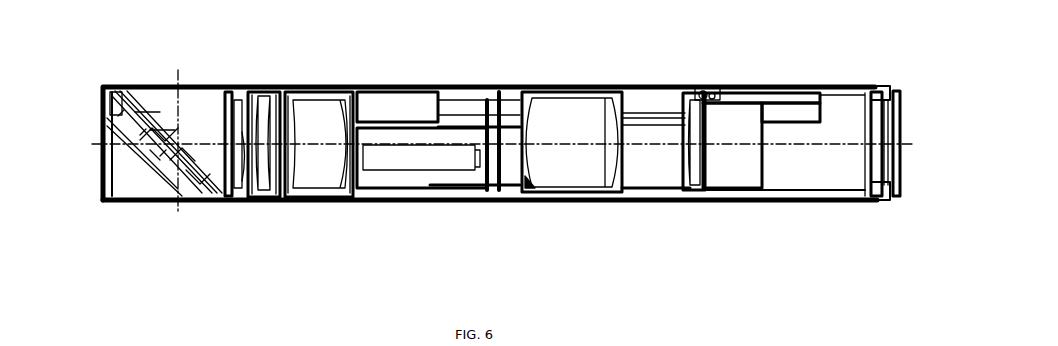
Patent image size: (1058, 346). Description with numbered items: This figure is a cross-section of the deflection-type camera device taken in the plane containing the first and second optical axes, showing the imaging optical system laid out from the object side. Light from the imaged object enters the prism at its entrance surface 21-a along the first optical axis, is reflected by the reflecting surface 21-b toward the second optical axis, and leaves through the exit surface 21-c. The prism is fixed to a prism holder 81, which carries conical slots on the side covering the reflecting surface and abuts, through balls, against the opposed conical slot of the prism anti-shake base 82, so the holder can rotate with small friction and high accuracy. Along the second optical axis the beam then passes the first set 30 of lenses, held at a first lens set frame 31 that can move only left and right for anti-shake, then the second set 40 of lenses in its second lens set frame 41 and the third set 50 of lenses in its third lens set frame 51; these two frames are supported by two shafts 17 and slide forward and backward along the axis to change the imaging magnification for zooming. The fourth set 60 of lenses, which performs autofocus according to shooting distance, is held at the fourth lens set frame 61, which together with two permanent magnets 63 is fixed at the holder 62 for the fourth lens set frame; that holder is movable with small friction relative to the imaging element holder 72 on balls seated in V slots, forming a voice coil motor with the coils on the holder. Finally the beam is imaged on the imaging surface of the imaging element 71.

The prism holder 81 is at (100, 89).
The prism anti-shake base 82 is at (107, 128).
The entrance surface 21-a is at (200, 87).
The reflecting surface 21-b is at (190, 203).
The exit surface 21-c is at (242, 203).
The first set of lenses 30 is at (268, 90).
The first lens set frame 31 is at (273, 203).
The second set of lenses 40 is at (323, 90).
The second lens set frame 41 is at (340, 203).
The shafts 17 is at (467, 105).
The third set of lenses 50 is at (577, 115).
The third lens set frame 51 is at (570, 200).
The fourth set of lenses 60 is at (690, 92).
The fourth lens set frame 61 is at (692, 200).
The holder for the fourth lens set frame 62 is at (796, 113).
The permanent magnets for autofocus of the fourth set of lenses 63 is at (803, 97).
The imaging element 71 is at (900, 118).
The imaging element holder 72 is at (870, 90).